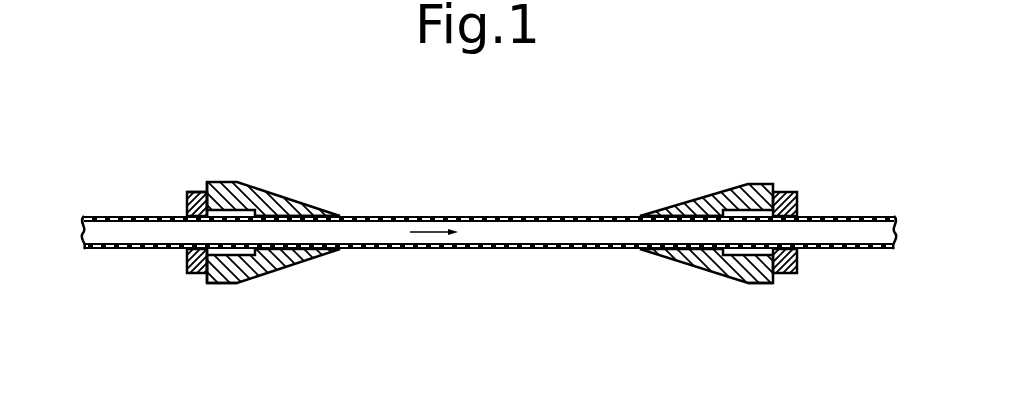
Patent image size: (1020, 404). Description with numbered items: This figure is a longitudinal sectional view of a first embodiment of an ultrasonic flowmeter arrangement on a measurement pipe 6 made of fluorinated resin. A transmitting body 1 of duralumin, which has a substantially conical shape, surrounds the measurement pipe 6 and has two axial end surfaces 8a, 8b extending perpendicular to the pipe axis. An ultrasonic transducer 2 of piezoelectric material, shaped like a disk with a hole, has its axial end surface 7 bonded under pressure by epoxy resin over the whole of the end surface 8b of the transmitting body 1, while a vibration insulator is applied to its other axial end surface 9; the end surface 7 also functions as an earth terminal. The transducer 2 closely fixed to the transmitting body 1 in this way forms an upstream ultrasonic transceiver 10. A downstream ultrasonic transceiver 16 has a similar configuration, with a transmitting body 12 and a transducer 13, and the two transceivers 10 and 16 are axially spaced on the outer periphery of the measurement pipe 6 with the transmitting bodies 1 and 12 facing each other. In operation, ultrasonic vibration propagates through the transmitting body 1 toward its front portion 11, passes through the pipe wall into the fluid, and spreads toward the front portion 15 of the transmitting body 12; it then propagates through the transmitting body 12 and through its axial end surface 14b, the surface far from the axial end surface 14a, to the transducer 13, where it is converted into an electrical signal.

The transmitting body 1 is at (268, 194).
The ultrasonic transducer 2 is at (193, 191).
The measurement pipe 6 is at (488, 250).
The axial end surface of ultrasonic transducer 7 is at (207, 183).
The axial end surface of transmitting body 8a is at (341, 215).
The axial end surface of transmitting body 8b is at (208, 276).
The other axial end surface of ultrasonic transducer 9 is at (186, 197).
The upstream ultrasonic transceiver 10 is at (230, 140).
The front portion 11 is at (313, 257).
The transmitting body 12 is at (704, 198).
The transducer 13 is at (786, 193).
The axial end surface 14a is at (641, 216).
The axial end surface 14b is at (777, 284).
The front portion 15 is at (663, 257).
The downstream ultrasonic transceiver 16 is at (745, 138).